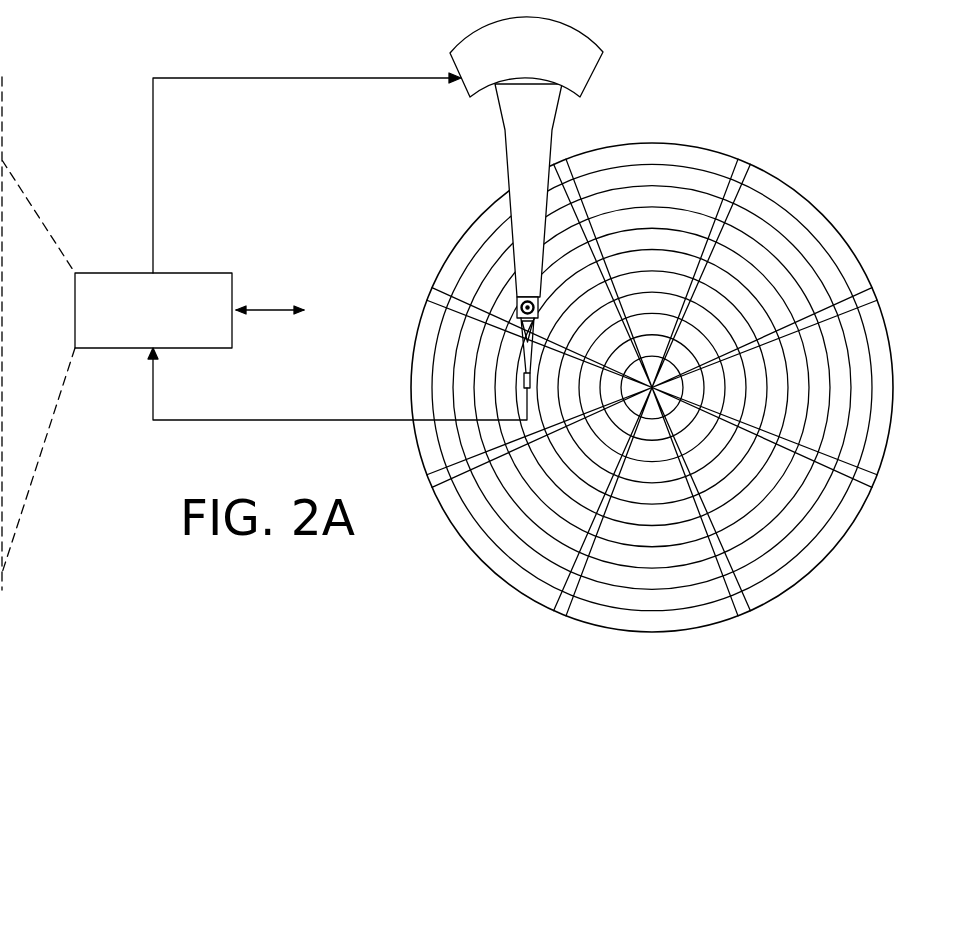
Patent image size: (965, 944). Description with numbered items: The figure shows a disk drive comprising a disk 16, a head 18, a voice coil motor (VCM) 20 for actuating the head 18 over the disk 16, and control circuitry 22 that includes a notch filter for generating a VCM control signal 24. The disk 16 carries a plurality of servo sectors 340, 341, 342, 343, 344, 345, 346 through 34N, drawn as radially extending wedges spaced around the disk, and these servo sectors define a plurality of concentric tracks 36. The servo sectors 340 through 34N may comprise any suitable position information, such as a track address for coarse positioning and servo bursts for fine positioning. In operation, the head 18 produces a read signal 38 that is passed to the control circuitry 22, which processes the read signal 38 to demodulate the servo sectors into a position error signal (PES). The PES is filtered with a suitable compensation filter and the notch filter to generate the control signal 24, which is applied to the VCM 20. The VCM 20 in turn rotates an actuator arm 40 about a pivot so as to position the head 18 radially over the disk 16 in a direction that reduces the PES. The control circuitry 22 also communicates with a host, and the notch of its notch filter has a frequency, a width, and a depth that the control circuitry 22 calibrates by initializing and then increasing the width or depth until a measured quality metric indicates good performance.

The disk 16 is at (817, 194).
The head 18 is at (514, 393).
The voice coil motor (VCM) 20 is at (468, 95).
The control circuitry 22 is at (195, 273).
The VCM control signal 24 is at (153, 161).
The tracks 36 is at (650, 175).
The read signal 38 is at (296, 421).
The actuator arm 40 is at (508, 177).
The servo sector 340 is at (745, 165).
The servo sector 341 is at (868, 299).
The servo sector 342 is at (866, 478).
The servo sector 343 is at (740, 605).
The servo sector 344 is at (556, 608).
The servo sector 345 is at (431, 482).
The servo sector 346 is at (432, 288).
The servo sector 34N is at (566, 165).